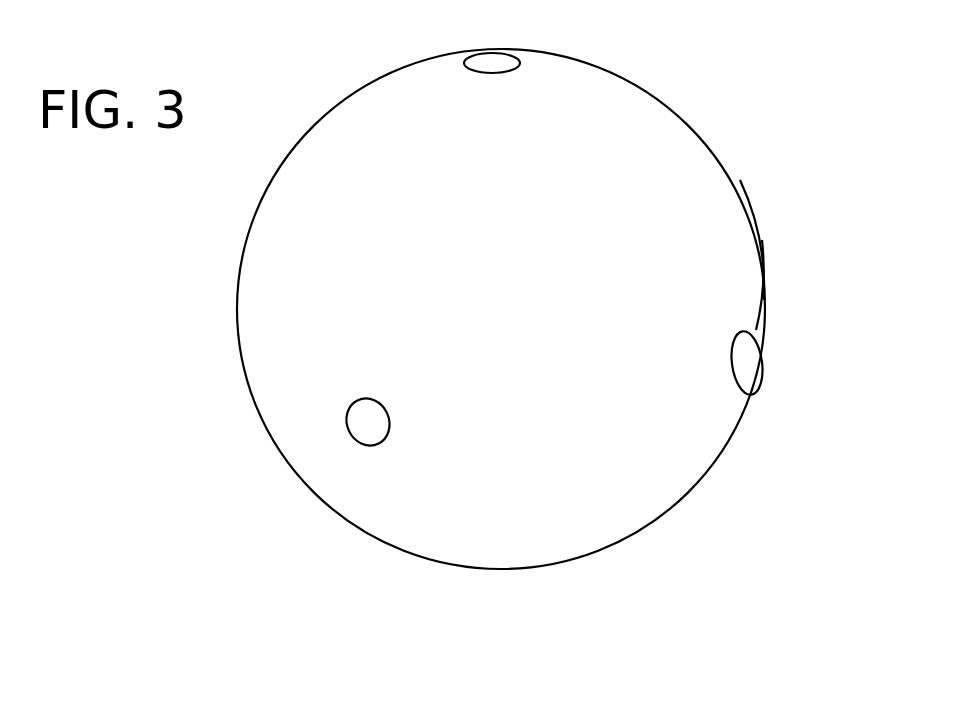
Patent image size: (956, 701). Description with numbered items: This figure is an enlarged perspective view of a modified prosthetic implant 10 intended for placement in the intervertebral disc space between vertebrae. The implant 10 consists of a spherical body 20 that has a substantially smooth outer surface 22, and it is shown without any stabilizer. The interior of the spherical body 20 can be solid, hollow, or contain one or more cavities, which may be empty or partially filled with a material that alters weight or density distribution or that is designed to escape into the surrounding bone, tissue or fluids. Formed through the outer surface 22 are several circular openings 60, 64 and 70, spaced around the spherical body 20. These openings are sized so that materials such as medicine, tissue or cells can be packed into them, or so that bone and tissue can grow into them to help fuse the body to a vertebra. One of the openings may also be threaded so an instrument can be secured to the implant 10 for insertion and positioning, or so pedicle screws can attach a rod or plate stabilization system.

The prosthetic implant 10 is at (740, 140).
The spherical body 20 is at (763, 268).
The outer surface 22 is at (727, 225).
The opening 60 is at (492, 62).
The opening 64 is at (742, 363).
The opening 70 is at (368, 422).